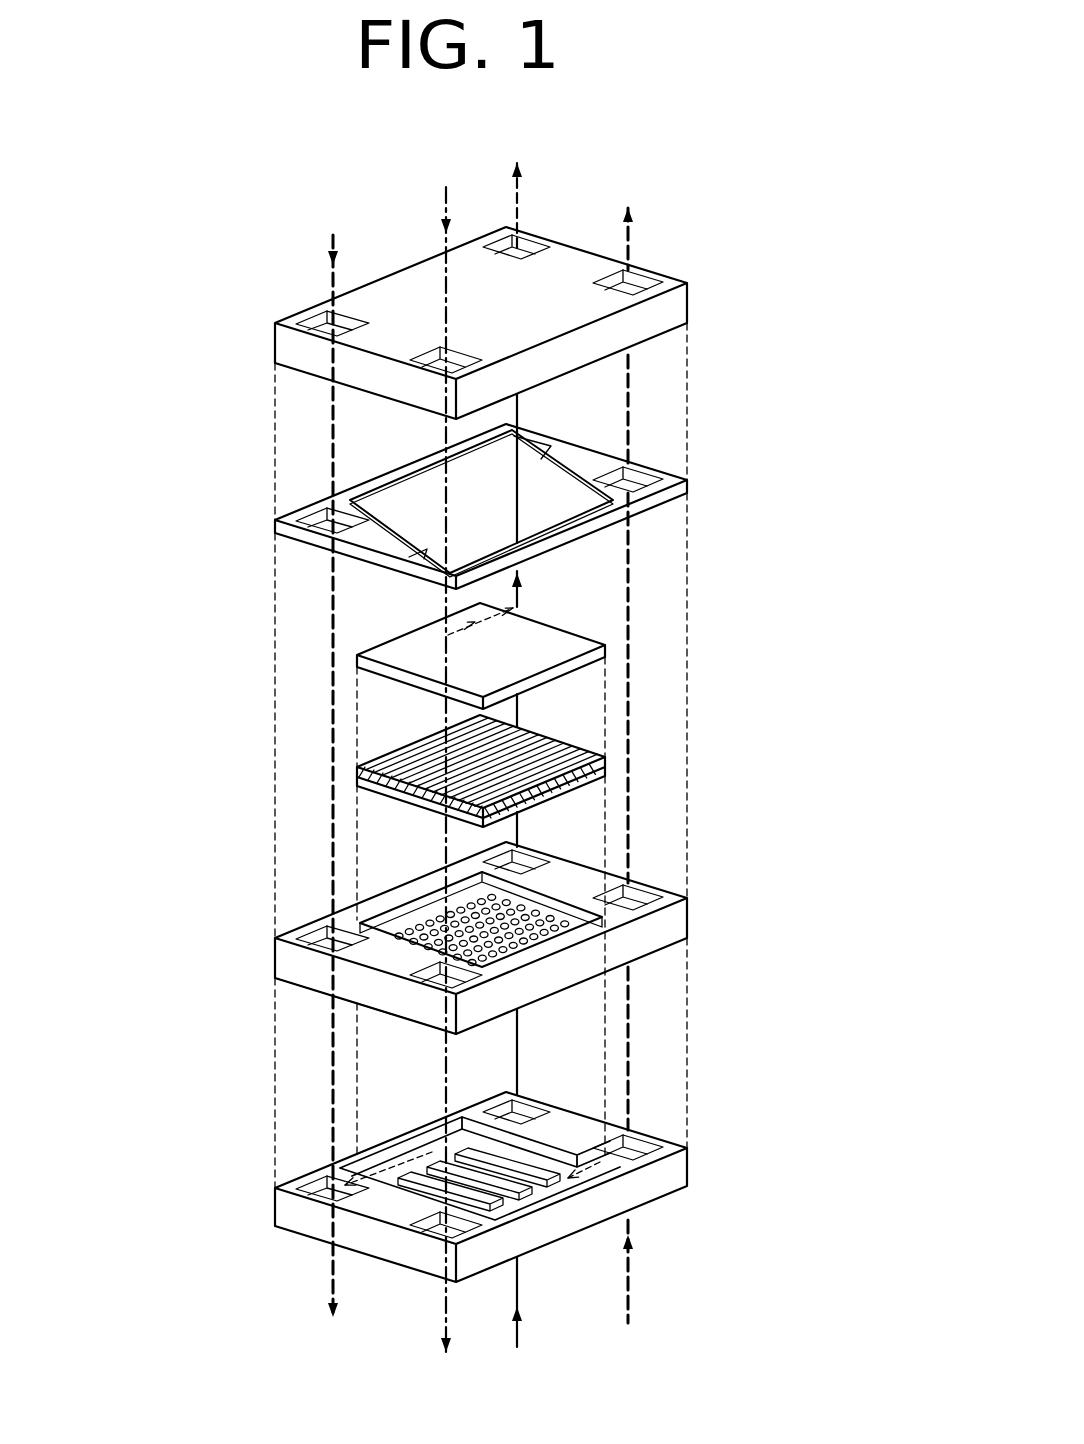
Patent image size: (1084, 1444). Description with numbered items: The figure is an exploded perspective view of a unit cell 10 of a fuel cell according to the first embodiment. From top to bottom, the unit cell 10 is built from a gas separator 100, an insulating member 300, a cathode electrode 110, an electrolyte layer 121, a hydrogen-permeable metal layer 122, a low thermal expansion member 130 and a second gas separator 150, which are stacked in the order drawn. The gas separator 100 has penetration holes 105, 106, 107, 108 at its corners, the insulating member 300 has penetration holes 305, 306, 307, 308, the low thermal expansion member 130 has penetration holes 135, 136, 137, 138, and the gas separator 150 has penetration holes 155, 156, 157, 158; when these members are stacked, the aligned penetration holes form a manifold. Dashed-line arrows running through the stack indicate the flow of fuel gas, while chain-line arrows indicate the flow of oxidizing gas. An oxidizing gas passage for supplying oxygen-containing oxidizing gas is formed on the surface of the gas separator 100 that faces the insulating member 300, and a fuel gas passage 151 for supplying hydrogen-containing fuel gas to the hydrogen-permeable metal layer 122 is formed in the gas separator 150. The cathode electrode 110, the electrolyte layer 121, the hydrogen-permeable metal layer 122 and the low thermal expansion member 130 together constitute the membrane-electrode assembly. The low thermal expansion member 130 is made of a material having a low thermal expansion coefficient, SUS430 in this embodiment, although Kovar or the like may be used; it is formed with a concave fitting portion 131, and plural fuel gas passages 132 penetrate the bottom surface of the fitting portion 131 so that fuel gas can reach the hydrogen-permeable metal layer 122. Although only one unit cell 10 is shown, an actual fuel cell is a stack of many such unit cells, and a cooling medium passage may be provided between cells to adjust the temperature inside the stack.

The unit cell 10 is at (718, 206).
The gas separator 100 is at (688, 300).
The penetration hole 105 is at (648, 283).
The penetration hole 106 is at (530, 248).
The penetration hole 107 is at (313, 322).
The penetration hole 108 is at (430, 362).
The insulating member 300 is at (673, 493).
The penetration hole 305 is at (642, 480).
The penetration hole 306 is at (524, 460).
The penetration hole 307 is at (313, 522).
The penetration hole 308 is at (437, 553).
The cathode electrode 110 is at (592, 638).
The electrolyte layer 121 is at (593, 758).
The hydrogen-permeable metal layer 122 is at (582, 778).
The low thermal expansion member 130 is at (675, 917).
The fitting portion 131 is at (407, 918).
The fuel gas passage 132 is at (312, 963).
The penetration hole 135 is at (645, 898).
The penetration hole 136 is at (530, 862).
The penetration hole 137 is at (318, 938).
The penetration hole 138 is at (417, 987).
The gas separator 150 is at (675, 1168).
The fuel gas passage 151 is at (433, 1155).
The penetration hole 155 is at (642, 1150).
The penetration hole 156 is at (530, 1110).
The penetration hole 157 is at (320, 1192).
The penetration hole 158 is at (430, 1226).